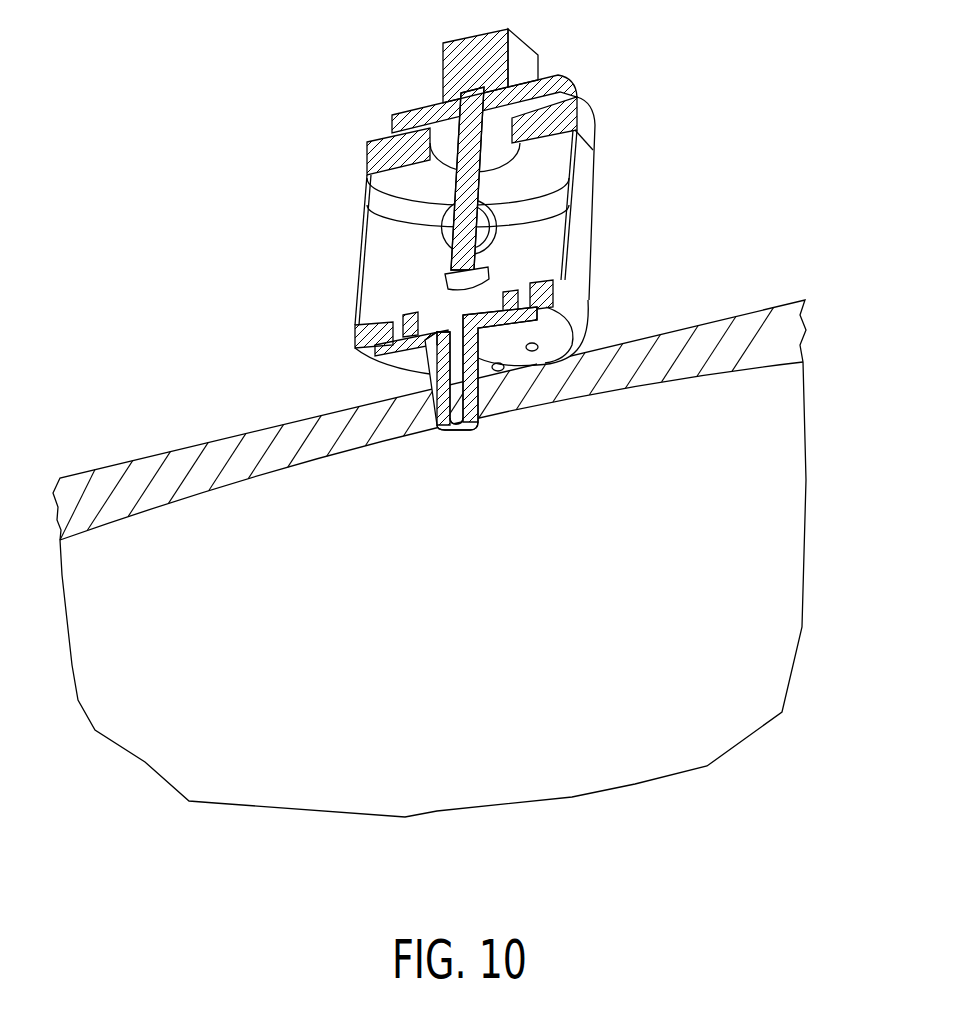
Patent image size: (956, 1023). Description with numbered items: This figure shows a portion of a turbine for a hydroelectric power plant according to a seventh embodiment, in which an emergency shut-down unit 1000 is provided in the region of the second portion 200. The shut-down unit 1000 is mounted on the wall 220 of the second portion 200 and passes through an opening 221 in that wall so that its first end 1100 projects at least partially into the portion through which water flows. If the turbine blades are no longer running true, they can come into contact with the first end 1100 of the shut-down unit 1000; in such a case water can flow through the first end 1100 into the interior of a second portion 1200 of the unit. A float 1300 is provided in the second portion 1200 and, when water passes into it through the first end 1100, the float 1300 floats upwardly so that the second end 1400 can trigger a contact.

The second portion 200 is at (429, 558).
The container wall 220 is at (297, 420).
The wall opening 221 is at (433, 398).
The emergency shut-down unit 1000 is at (496, 221).
The first end 1100 is at (513, 355).
The second portion 1200 is at (583, 226).
The float 1300 is at (445, 236).
The second end 1400 is at (530, 55).